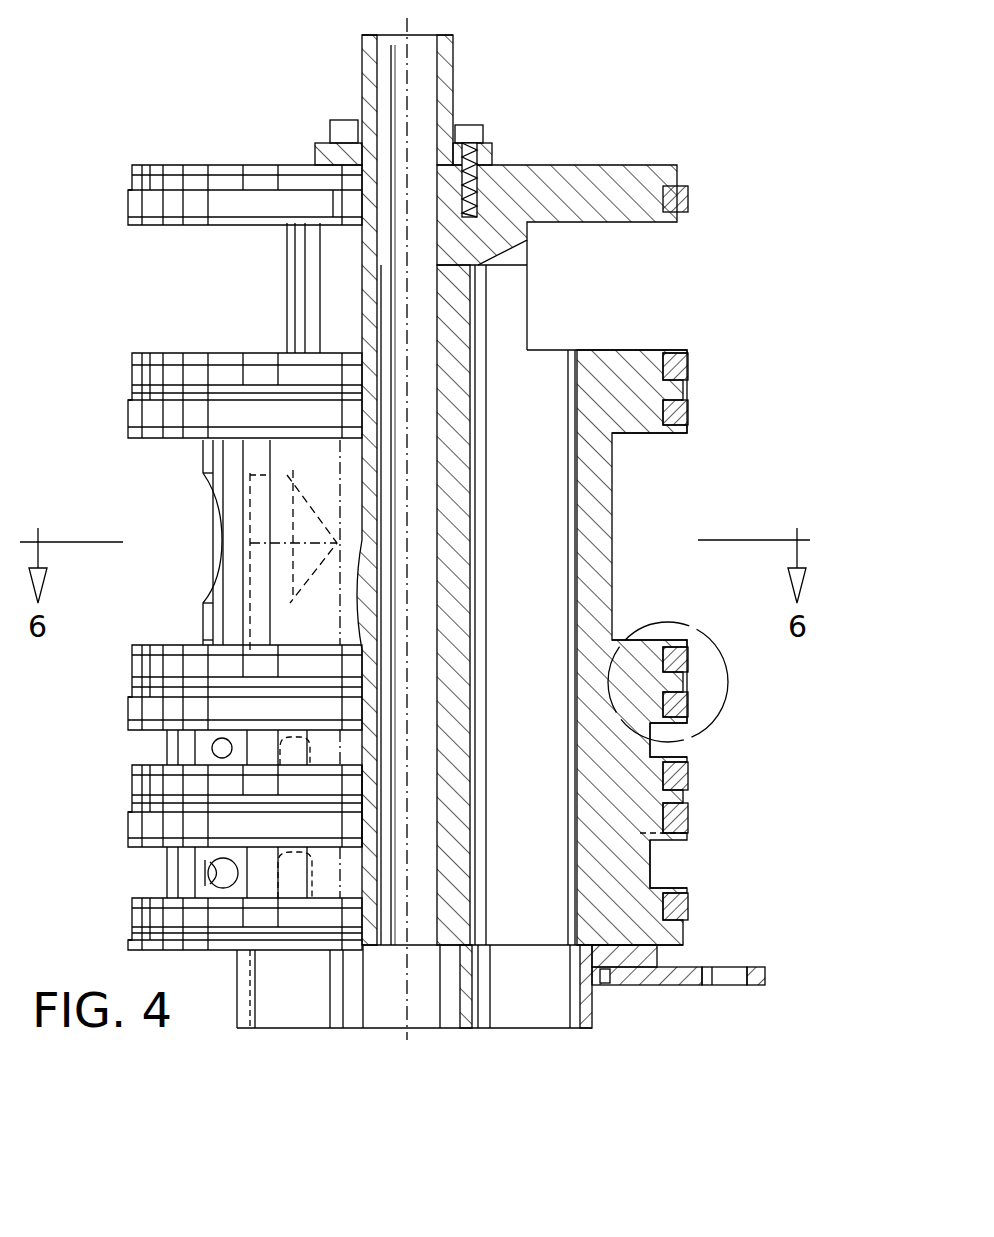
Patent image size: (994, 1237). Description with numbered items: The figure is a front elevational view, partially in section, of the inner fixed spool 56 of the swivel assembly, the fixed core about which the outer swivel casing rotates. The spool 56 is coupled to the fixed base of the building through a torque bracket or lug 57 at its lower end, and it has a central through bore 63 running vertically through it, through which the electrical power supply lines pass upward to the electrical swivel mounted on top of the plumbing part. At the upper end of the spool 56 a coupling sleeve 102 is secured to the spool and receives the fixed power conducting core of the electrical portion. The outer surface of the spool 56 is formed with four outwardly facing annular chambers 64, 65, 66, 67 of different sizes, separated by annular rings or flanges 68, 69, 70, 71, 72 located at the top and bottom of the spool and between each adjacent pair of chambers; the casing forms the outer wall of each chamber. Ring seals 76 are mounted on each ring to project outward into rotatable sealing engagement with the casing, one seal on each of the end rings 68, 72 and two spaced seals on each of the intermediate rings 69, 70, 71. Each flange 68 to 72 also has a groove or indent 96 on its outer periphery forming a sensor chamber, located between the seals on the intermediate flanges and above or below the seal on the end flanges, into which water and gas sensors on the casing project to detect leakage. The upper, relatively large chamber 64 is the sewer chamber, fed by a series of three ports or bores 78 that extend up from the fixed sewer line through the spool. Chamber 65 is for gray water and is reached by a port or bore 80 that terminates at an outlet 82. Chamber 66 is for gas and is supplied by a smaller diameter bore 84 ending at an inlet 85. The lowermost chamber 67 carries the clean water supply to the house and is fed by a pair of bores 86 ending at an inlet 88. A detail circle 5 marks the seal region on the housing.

The detail circle of seal region 5 is at (730, 690).
The inner fixed spool 56 is at (598, 487).
The torque bracket or lug 57 is at (673, 985).
The central through bore 63 is at (398, 337).
The sewer chamber 64 is at (178, 275).
The gray water chamber 65 is at (148, 455).
The gas chamber 66 is at (128, 734).
The clean water chamber 67 is at (128, 866).
The upper annular ring 68 is at (578, 163).
The annular ring 69 is at (612, 350).
The annular ring 70 is at (653, 640).
The annular ring 71 is at (690, 752).
The lower annular ring 72 is at (672, 887).
The ring seals 76 is at (692, 200).
The ports or bores 78 is at (532, 392).
The port or bore 80 is at (192, 607).
The outlet 82 is at (218, 512).
The bore or port 84 is at (363, 793).
The inlet 85 is at (213, 751).
The ports or bores 86 is at (300, 905).
The inlet 88 is at (160, 876).
The groove or indent 96 is at (132, 178).
The coupling sleeve 102 is at (457, 62).